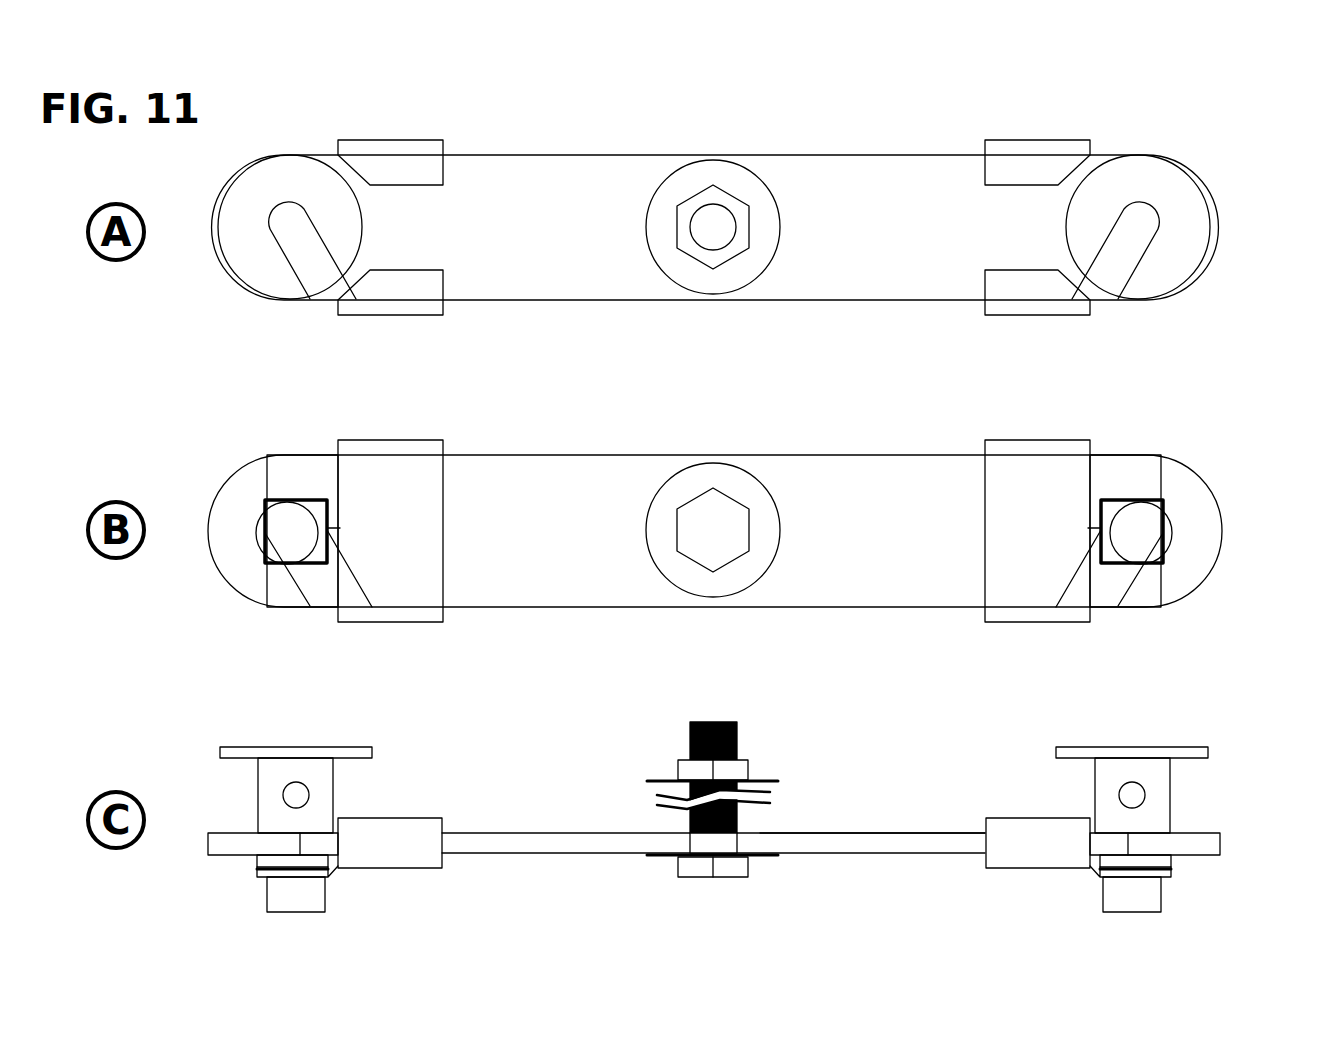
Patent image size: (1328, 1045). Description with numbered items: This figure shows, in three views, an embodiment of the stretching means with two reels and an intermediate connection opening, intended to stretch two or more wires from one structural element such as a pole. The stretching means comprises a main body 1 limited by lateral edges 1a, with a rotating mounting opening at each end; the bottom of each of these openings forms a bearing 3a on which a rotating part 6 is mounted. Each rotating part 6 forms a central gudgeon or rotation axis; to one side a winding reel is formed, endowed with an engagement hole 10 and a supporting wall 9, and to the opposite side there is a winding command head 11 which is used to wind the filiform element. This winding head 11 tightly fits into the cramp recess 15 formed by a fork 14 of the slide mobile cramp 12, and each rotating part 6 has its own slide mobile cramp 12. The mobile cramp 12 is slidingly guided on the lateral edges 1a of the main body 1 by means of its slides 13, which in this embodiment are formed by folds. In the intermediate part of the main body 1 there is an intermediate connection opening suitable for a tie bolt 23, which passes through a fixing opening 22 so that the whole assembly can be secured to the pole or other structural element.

The main body 1 is at (560, 142).
The lateral edge of the main body 1a is at (912, 842).
The bearing 3a is at (290, 210).
The rotating part 6 is at (232, 278).
The supporting wall of the reel 9 is at (257, 243).
The engagement hole 10 is at (297, 792).
The winding command head 11 is at (293, 524).
The slide mobile cramp 12 is at (392, 132).
The slides of the mobile cramp 13 is at (443, 307).
The cramp fork 14 is at (298, 475).
The cramp recess 15 is at (327, 528).
The fixing opening 22 is at (687, 843).
The tie bolt 23 is at (708, 223).